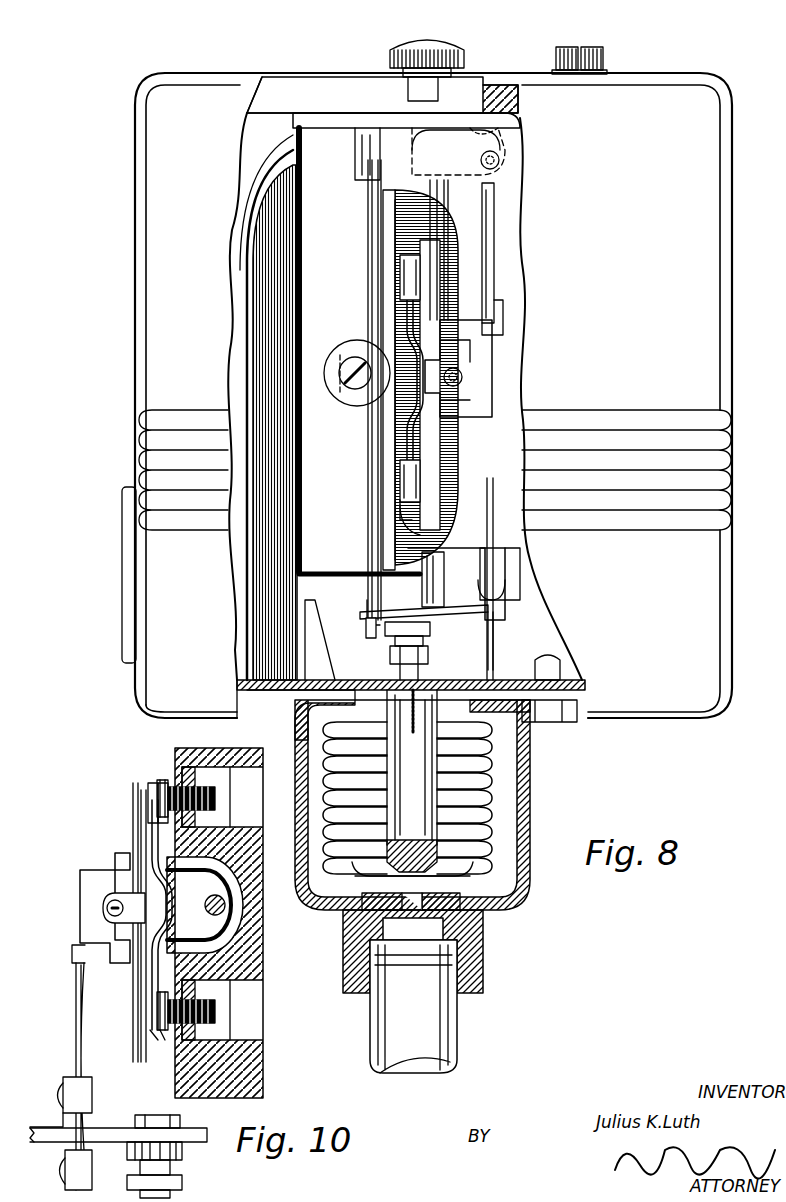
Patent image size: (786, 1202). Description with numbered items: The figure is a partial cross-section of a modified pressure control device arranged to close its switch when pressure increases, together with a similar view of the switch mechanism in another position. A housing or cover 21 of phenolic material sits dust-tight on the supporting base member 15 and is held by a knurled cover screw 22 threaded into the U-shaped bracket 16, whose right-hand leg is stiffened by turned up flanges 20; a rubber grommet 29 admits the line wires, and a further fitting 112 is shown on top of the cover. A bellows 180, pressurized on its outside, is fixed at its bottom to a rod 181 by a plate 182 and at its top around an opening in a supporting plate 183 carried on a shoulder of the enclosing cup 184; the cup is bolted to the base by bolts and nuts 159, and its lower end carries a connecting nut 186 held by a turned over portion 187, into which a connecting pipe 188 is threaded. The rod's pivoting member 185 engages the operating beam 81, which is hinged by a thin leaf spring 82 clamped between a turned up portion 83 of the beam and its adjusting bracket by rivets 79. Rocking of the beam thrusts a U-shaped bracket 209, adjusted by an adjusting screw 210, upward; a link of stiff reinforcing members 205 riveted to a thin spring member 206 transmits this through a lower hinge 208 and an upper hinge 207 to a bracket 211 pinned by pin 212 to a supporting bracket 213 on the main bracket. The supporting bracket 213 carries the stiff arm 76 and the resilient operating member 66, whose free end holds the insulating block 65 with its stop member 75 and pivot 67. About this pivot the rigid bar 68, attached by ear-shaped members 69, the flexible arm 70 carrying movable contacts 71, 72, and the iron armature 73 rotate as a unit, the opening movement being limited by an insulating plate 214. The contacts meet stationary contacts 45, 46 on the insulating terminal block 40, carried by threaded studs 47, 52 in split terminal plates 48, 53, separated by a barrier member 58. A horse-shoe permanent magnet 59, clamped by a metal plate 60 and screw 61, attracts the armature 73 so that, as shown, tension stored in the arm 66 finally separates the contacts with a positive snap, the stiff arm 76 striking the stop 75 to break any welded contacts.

In FIG. 8, the supporting base member 15 is at (240, 664).
In FIG. 8, the U-shaped bracket 16 is at (292, 130).
In FIG. 8, the turned up flanges 20 is at (252, 268).
In FIG. 8, the housing or cover 21 is at (160, 158).
In FIG. 8, the cover screw 22 is at (440, 38).
In FIG. 8, the rubber grommet 29 is at (121, 585).
In FIG. 8, the supporting terminal block 40 is at (305, 222).
In FIG. 10, the supporting terminal block 40 is at (265, 1054).
In FIG. 8, the stationary contact 45 is at (368, 244).
In FIG. 10, the stationary contact 45 is at (160, 785).
In FIG. 8, the stationary contact 46 is at (405, 512).
In FIG. 10, the stationary contact 46 is at (160, 1030).
In FIG. 10, the threaded adjustable stud 47 is at (215, 802).
In FIG. 10, the terminal plate 48 is at (215, 785).
In FIG. 10, the threaded stud 52 is at (215, 1016).
In FIG. 10, the terminal plate 53 is at (215, 993).
In FIG. 8, the barrier member 58 is at (465, 450).
In FIG. 8, the horse-shoe shaped permanent magnet 59 is at (360, 428).
In FIG. 10, the horse-shoe shaped permanent magnet 59 is at (205, 935).
In FIG. 8, the metal plate 60 is at (348, 345).
In FIG. 8, the screw 61 is at (347, 385).
In FIG. 8, the insulating supporting member or block 65 is at (480, 362).
In FIG. 10, the insulating supporting member or block 65 is at (90, 870).
In FIG. 8, the resilient operating member 66 is at (494, 262).
In FIG. 10, the resilient operating member 66 is at (88, 1026).
In FIG. 8, the pivot 67 is at (462, 380).
In FIG. 10, the pivot 67 is at (108, 908).
In FIG. 8, the rigid bar 68 is at (452, 256).
In FIG. 10, the rigid bar 68 is at (137, 810).
In FIG. 10, the ear-shaped members 69 is at (108, 896).
In FIG. 10, the flexible contact supporting member or arm 70 is at (144, 832).
In FIG. 8, the movable contact 71 is at (440, 248).
In FIG. 10, the movable contact 71 is at (149, 790).
In FIG. 8, the movable contact 72 is at (408, 530).
In FIG. 10, the movable contact 72 is at (152, 1028).
In FIG. 8, the iron armature 73 is at (410, 322).
In FIG. 10, the iron armature 73 is at (170, 885).
In FIG. 8, the stop member 75 is at (504, 318).
In FIG. 10, the stop member 75 is at (70, 955).
In FIG. 8, the stiff arm 76 is at (494, 280).
In FIG. 10, the stiff arm 76 is at (74, 1004).
In FIG. 8, the rivets 79 is at (515, 548).
In FIG. 10, the rivets 79 is at (62, 1092).
In FIG. 8, the operating beam 81 is at (495, 645).
In FIG. 10, the operating beam 81 is at (104, 1130).
In FIG. 8, the leaf spring 82 is at (492, 590).
In FIG. 10, the leaf spring 82 is at (80, 1140).
In FIG. 8, the turned up portion 83 is at (488, 565).
In FIG. 10, the turned up portion 83 is at (70, 1076).
In FIG. 8, the terminal 112 is at (596, 44).
In FIG. 8, the bolts and nuts 159 is at (578, 714).
In FIG. 8, the bellows 180 is at (495, 800).
In FIG. 8, the rod 181 is at (430, 820).
In FIG. 8, the plate 182 is at (380, 870).
In FIG. 8, the supporting plate 183 is at (300, 737).
In FIG. 8, the enclosing cup 184 is at (536, 740).
In FIG. 8, the pivoting member 185 is at (428, 640).
In FIG. 8, the connecting nut 186 is at (470, 950).
In FIG. 8, the turned over portion 187 is at (460, 890).
In FIG. 8, the connecting pipe 188 is at (425, 1026).
In FIG. 8, the stiff reinforcing members 205 is at (366, 262).
In FIG. 8, the thin spring member 206 is at (372, 283).
In FIG. 8, the hinge 207 is at (372, 180).
In FIG. 8, the second hinge 208 is at (365, 608).
In FIG. 8, the U-shaped bracket 209 is at (468, 605).
In FIG. 8, the adjusting screw 210 is at (430, 568).
In FIG. 8, the bracket 211 is at (440, 150).
In FIG. 8, the pin 212 is at (500, 160).
In FIG. 8, the supporting bracket 213 is at (505, 140).
In FIG. 8, the insulating plate 214 is at (490, 480).